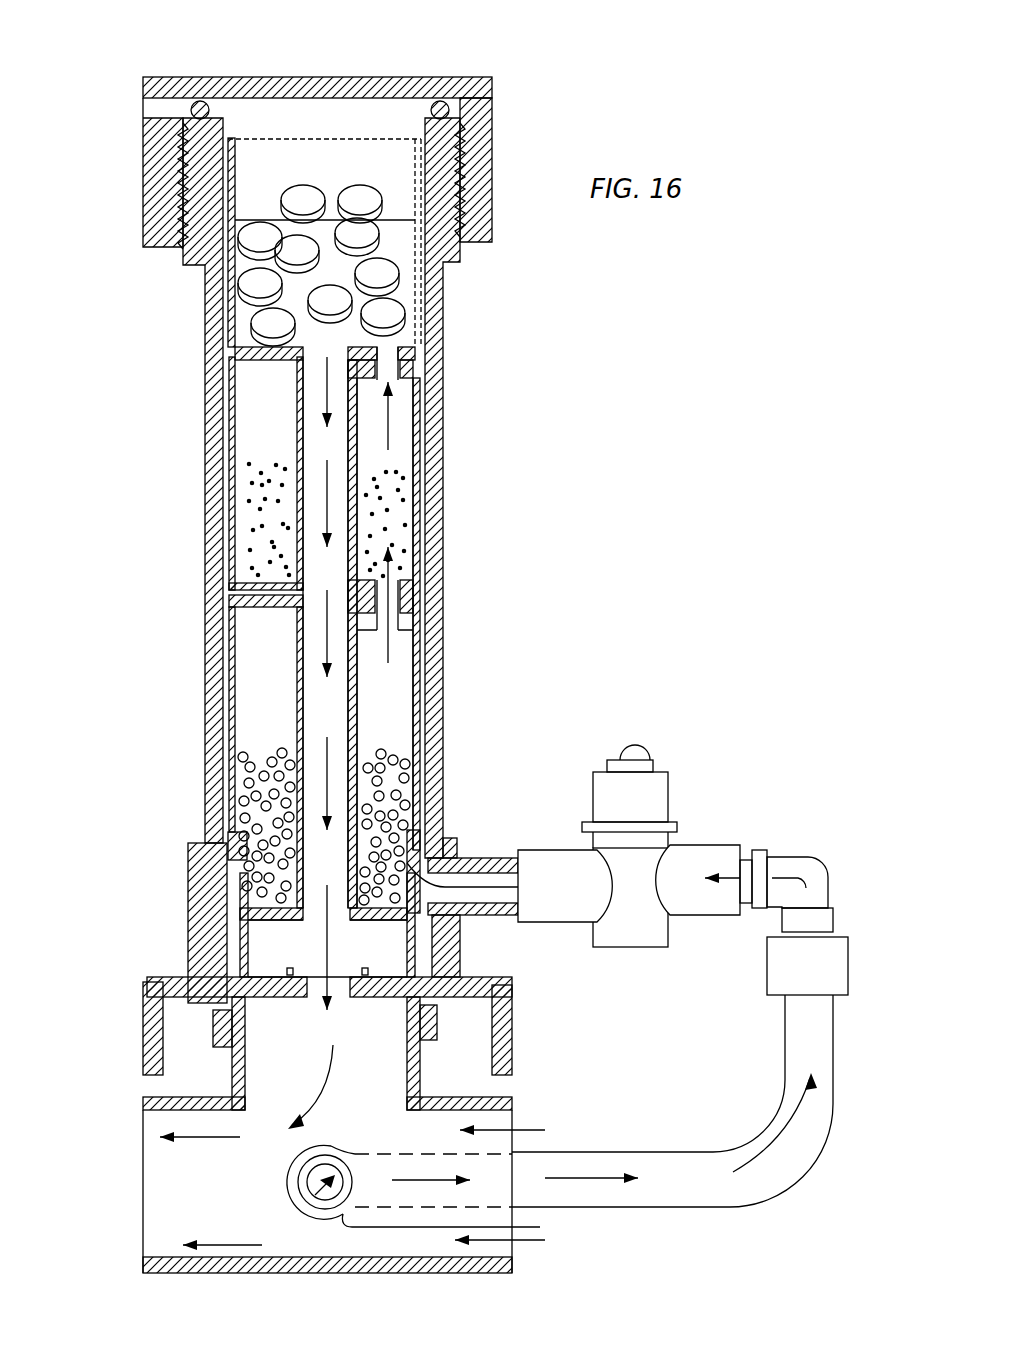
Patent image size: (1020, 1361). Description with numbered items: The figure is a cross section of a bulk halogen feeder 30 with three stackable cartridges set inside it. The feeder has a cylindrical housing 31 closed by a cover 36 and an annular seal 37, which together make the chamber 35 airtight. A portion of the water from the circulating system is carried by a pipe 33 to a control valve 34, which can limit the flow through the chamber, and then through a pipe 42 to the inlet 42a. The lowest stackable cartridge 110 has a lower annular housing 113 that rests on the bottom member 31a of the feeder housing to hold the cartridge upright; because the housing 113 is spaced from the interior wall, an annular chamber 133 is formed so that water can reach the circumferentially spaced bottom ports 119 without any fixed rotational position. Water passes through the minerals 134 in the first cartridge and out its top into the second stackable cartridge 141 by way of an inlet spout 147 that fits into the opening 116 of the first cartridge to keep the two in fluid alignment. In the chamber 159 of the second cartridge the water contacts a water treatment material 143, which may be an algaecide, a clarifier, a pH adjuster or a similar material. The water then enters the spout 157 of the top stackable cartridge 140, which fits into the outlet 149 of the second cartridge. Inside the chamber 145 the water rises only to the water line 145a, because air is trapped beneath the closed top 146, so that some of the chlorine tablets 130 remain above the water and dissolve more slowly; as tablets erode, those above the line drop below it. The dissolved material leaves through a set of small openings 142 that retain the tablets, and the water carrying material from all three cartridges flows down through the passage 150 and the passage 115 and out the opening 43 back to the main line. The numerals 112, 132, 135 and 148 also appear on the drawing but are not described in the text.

The bulk halogen feeder 30 is at (532, 89).
The cylindrical housing 31 is at (443, 448).
The bottom member 31a is at (232, 953).
The pipe 33 is at (642, 1152).
The control valve 34 is at (660, 770).
The chamber 35 is at (290, 100).
The cover 36 is at (150, 190).
The annular seal 37 is at (192, 104).
The pipe 42 is at (488, 857).
The inlet 42a is at (465, 858).
The outlet 43 is at (205, 1007).
The stackable cartridge 110 is at (425, 705).
The cartridge wall 112 is at (232, 585).
The lower annular housing 113 is at (420, 930).
The passage 115 is at (255, 615).
The opening 116 is at (410, 632).
The ports 119 is at (245, 865).
The chlorine tablets 130 is at (255, 277).
The chamber 132 is at (287, 696).
The annular chamber 133 is at (232, 905).
The minerals 134 is at (245, 795).
The bottom plate 135 is at (422, 955).
The stackable cartridge 140 is at (422, 275).
The stackable cartridge 141 is at (420, 432).
The small openings 142 is at (258, 325).
The water treatment material 143 is at (250, 510).
The chamber 145 is at (285, 176).
The water line 145a is at (395, 218).
The closed top 146 is at (383, 133).
The inlet spout 147 is at (408, 590).
The nozzle 148 is at (400, 565).
The outlet 149 is at (417, 360).
The passage 150 is at (323, 445).
The spout 157 is at (400, 383).
The chamber 159 is at (287, 406).